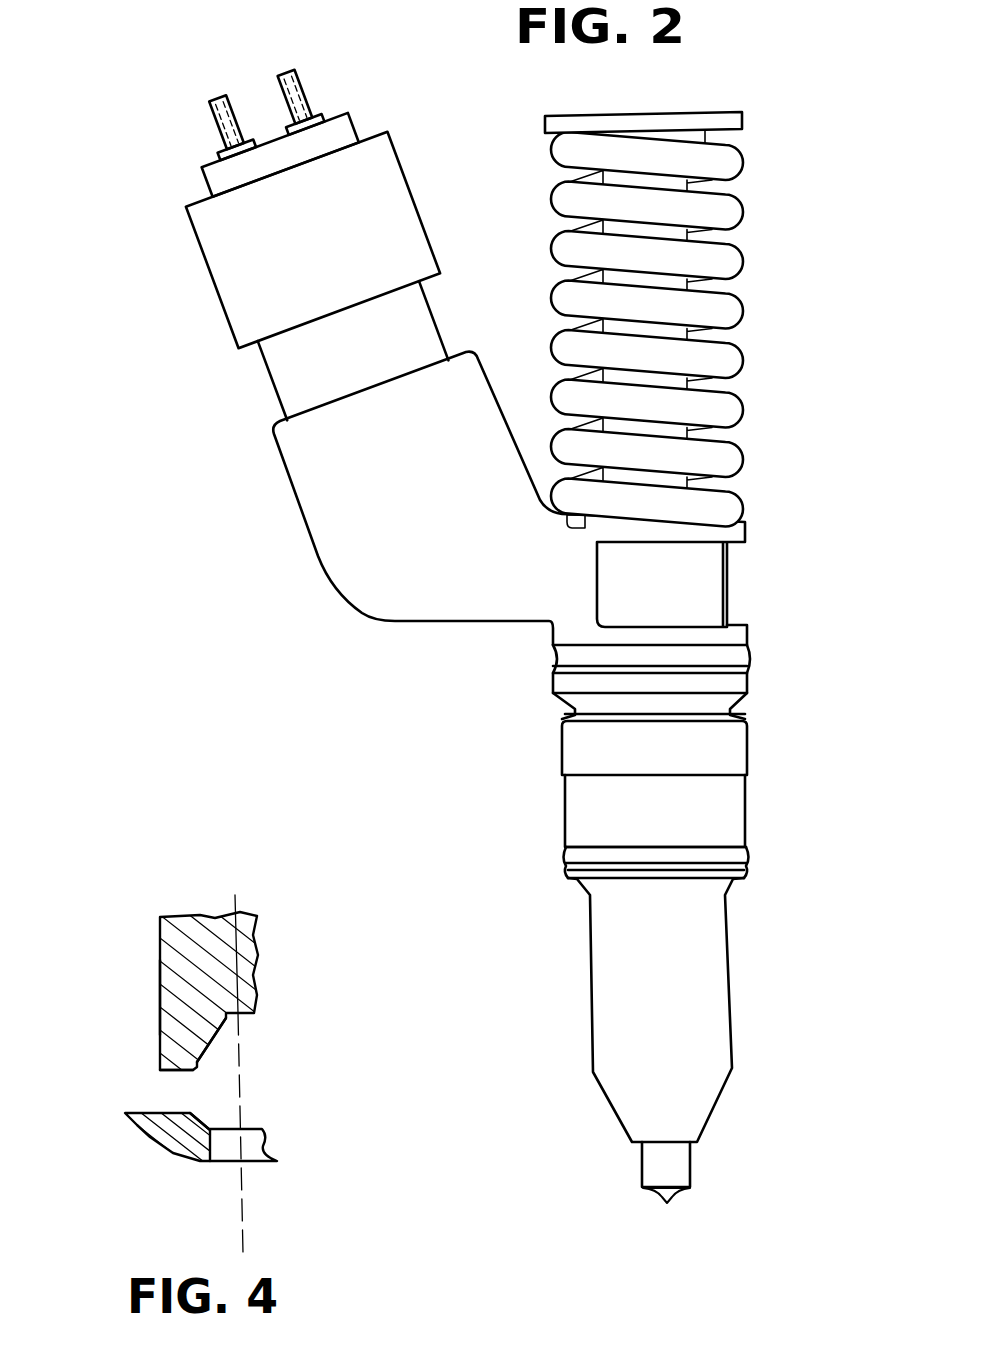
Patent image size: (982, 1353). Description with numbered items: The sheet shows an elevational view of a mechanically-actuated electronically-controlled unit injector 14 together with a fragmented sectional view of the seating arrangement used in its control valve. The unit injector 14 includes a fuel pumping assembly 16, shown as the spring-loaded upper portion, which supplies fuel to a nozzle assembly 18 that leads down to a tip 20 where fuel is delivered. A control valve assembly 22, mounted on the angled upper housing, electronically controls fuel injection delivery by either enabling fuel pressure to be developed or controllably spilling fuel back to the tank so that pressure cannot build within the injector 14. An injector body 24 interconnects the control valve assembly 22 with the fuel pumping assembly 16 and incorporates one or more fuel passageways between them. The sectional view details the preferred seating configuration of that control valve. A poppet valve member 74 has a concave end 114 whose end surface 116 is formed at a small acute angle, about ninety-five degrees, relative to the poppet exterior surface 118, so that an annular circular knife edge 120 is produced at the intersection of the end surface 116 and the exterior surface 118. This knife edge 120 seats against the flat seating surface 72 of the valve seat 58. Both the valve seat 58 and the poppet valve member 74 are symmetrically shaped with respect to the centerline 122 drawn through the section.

In FIG. 2, the unit injector 14 is at (773, 180).
In FIG. 2, the fuel pumping assembly 16 is at (690, 333).
In FIG. 2, the nozzle assembly 18 is at (715, 970).
In FIG. 2, the tip 20 is at (680, 1168).
In FIG. 2, the control valve assembly 22 is at (231, 249).
In FIG. 2, the injector body 24 is at (380, 535).
In FIG. 4, the valve seat 58 is at (173, 1137).
In FIG. 4, the flat seating surface 72 is at (165, 1112).
In FIG. 4, the poppet valve member 74 is at (175, 938).
In FIG. 4, the concave end 114 is at (256, 1057).
In FIG. 4, the end surface 116 is at (193, 1075).
In FIG. 4, the poppet exterior surface 118 is at (158, 1032).
In FIG. 4, the annular circular knife edge 120 is at (158, 1073).
In FIG. 4, the centerline 122 is at (243, 1222).